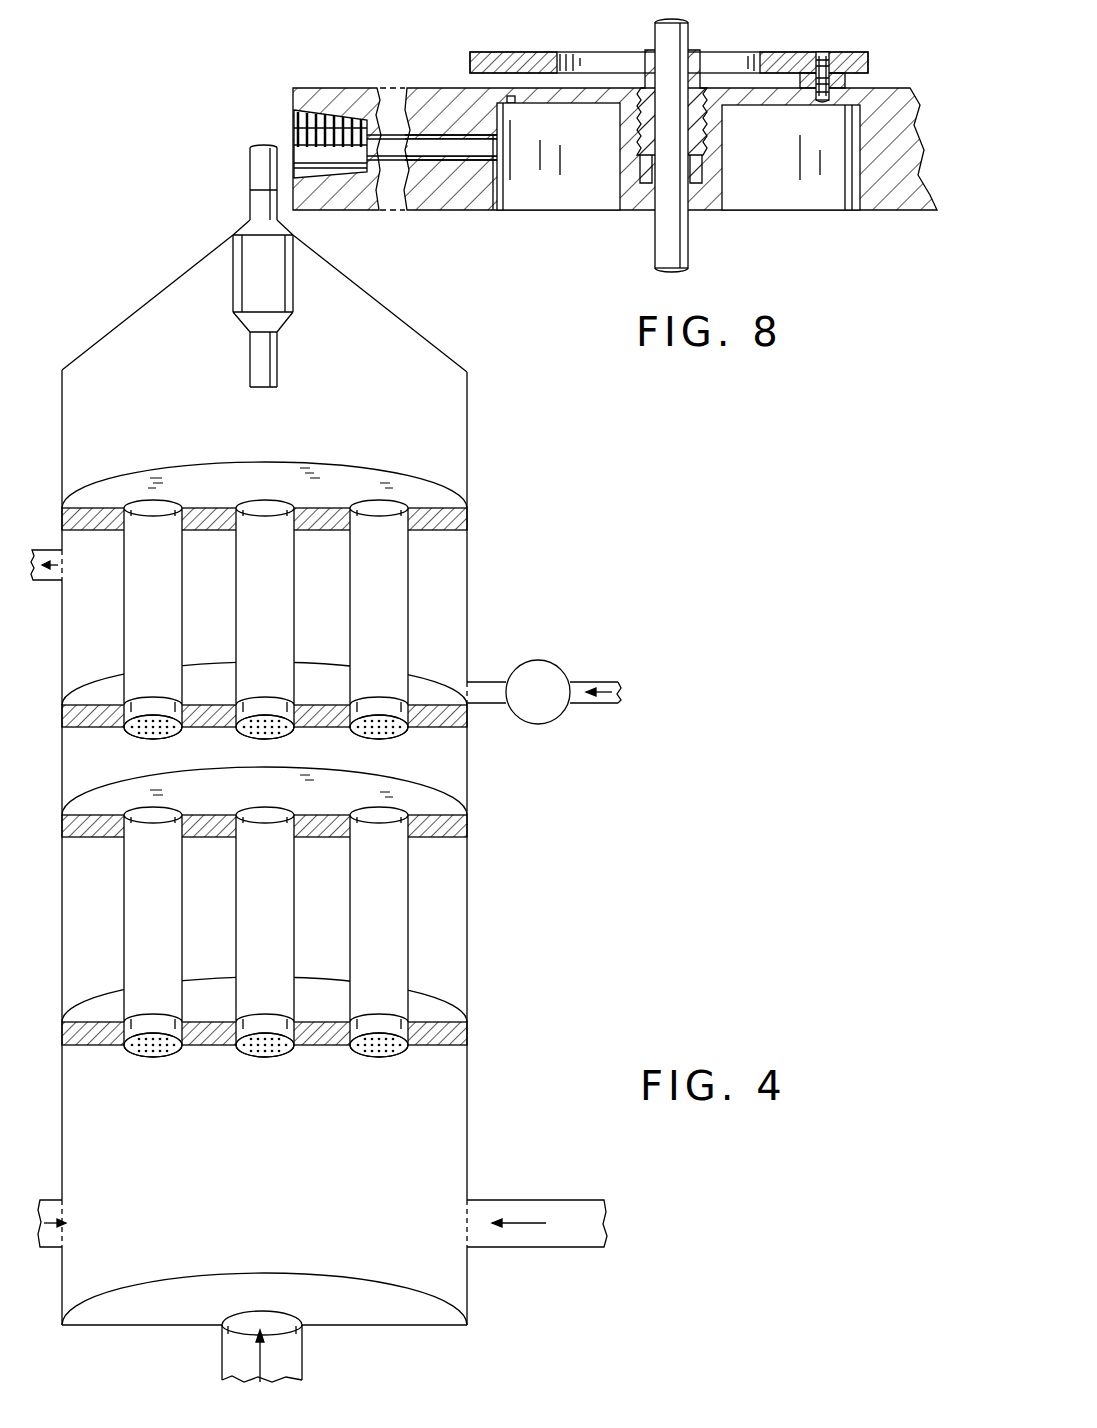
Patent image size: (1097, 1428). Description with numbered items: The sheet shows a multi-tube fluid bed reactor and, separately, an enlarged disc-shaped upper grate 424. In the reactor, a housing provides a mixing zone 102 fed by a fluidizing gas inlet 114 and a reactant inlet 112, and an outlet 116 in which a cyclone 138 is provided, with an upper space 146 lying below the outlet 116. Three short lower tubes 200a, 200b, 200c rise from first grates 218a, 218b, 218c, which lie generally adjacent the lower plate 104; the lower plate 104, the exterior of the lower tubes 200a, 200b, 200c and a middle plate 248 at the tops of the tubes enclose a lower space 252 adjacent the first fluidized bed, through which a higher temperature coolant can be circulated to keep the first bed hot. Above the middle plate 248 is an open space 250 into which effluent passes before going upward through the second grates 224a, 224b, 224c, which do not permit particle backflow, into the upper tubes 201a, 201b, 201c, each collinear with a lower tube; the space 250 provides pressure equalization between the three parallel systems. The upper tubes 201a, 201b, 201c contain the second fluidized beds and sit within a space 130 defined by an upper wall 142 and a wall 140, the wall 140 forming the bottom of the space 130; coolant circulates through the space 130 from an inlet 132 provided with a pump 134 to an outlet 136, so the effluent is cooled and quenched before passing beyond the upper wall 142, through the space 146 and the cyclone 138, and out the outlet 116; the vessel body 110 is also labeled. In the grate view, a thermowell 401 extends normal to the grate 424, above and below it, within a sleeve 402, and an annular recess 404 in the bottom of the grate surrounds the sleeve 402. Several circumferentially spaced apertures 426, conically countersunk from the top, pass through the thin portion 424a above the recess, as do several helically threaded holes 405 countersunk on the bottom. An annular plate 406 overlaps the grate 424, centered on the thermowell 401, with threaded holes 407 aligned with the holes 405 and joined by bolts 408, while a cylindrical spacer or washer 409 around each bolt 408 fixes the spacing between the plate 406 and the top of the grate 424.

In FIG. 4, the mixing zone 102 is at (432, 1152).
In FIG. 4, the lower plate 104 is at (317, 990).
In FIG. 4, the vessel body 110 is at (470, 892).
In FIG. 4, the reactant inlet 112 is at (57, 1212).
In FIG. 4, the fluidizing gas inlet 114 is at (290, 1357).
In FIG. 4, the outlet 116 is at (265, 218).
In FIG. 4, the space 130 is at (68, 655).
In FIG. 4, the inlet 132 is at (470, 692).
In FIG. 4, the pump 134 is at (548, 668).
In FIG. 4, the outlet 136 is at (57, 570).
In FIG. 4, the cyclone 138 is at (268, 295).
In FIG. 4, the wall 140 is at (298, 690).
In FIG. 4, the upper wall 142 is at (375, 483).
In FIG. 4, the upper space 146 is at (93, 385).
In FIG. 4, the lower tube 200a is at (182, 915).
In FIG. 4, the lower tube 200b is at (295, 917).
In FIG. 4, the lower tube 200c is at (410, 917).
In FIG. 4, the upper tube 201a is at (183, 563).
In FIG. 4, the upper tube 201b is at (295, 650).
In FIG. 4, the upper tube 201c is at (412, 623).
In FIG. 4, the first grate 218a is at (155, 1055).
In FIG. 4, the first grate 218b is at (270, 1052).
In FIG. 4, the first grate 218c is at (380, 1052).
In FIG. 4, the grate 224a is at (150, 730).
In FIG. 4, the grate 224b is at (263, 730).
In FIG. 4, the grate 224c is at (377, 730).
In FIG. 4, the middle plate 248 is at (270, 795).
In FIG. 4, the space 250 is at (443, 778).
In FIG. 4, the lower space 252 is at (445, 937).
In FIG. 8, the thermowell 401 is at (678, 242).
In FIG. 8, the sleeve 402 is at (643, 198).
In FIG. 8, the annular recess 404 is at (570, 187).
In FIG. 8, the helically threaded hole 405 is at (822, 102).
In FIG. 8, the annular plate 406 is at (508, 62).
In FIG. 8, the threaded hole 407 is at (833, 57).
In FIG. 8, the bolt 408 is at (820, 56).
In FIG. 8, the cylindrical spacer or washer 409 is at (840, 85).
In FIG. 8, the upper grate 424 is at (480, 197).
In FIG. 8, the thin portion 424a is at (577, 103).
In FIG. 8, the aperture 426 is at (513, 103).